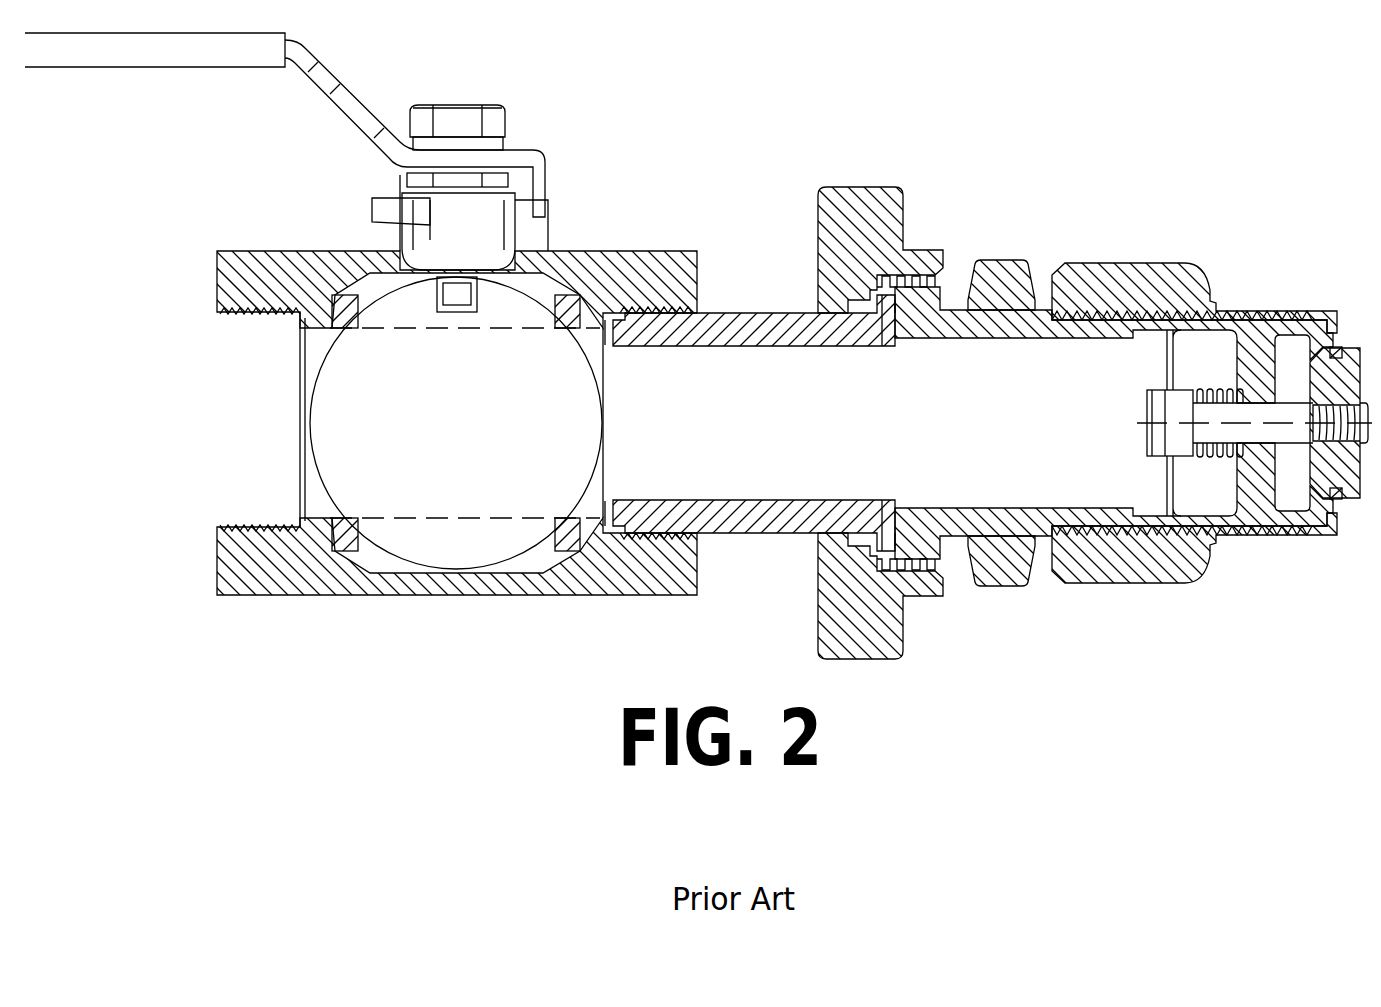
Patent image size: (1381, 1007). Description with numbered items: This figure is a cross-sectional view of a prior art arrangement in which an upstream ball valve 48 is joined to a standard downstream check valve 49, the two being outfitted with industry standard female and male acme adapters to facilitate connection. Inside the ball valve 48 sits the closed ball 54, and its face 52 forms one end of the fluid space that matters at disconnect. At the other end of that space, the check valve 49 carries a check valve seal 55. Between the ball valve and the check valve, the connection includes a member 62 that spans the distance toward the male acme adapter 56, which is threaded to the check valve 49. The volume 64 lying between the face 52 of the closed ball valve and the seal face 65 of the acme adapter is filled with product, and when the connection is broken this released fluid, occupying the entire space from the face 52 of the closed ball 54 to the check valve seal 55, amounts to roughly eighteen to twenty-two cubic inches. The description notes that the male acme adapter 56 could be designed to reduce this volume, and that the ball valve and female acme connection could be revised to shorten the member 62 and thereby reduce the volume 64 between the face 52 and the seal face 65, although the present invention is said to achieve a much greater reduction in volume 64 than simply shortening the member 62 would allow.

The upstream ball valve 48 is at (690, 503).
The downstream check valve 49 is at (773, 503).
The face of the closed ball 52 is at (588, 358).
The ball 54 is at (447, 537).
The check valve seal 55 is at (1336, 497).
The male acme adapter 56 is at (1000, 563).
The member 62 is at (766, 517).
The volume 64 is at (775, 427).
The seal face of the acme adapter 65 is at (884, 503).